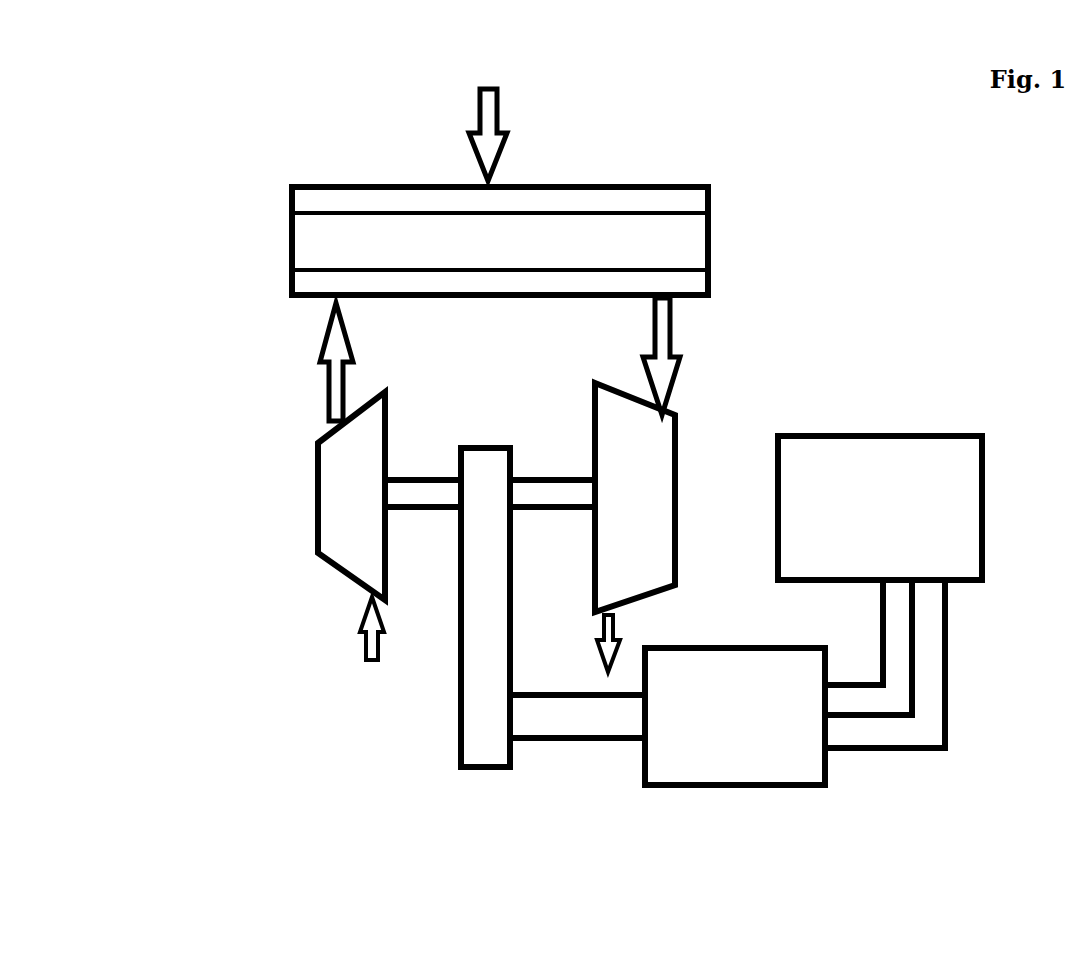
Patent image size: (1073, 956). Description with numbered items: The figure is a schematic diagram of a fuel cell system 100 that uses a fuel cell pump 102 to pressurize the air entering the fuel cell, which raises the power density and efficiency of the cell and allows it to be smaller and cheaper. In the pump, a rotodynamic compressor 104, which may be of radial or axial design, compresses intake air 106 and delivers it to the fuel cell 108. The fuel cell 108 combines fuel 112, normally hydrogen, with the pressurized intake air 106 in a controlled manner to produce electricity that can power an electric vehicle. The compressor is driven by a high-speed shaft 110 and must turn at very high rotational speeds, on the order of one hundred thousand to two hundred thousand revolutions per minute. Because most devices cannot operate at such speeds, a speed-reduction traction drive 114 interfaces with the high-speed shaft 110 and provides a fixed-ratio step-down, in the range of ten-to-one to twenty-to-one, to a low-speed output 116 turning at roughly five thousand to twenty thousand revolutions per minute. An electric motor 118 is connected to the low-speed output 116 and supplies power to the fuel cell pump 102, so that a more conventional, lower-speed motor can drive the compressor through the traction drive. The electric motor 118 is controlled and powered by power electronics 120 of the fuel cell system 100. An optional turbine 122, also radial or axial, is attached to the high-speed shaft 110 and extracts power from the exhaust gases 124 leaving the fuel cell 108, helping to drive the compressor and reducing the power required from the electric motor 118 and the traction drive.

The fuel cell system 100 is at (262, 178).
The fuel cell pump 102 is at (466, 559).
The rotodynamic compressor 104 is at (330, 528).
The intake air 106 is at (362, 648).
The fuel cell 108 is at (562, 228).
The high-speed shaft 110 is at (424, 490).
The fuel 112 is at (482, 147).
The speed-reduction traction drive 114 is at (483, 597).
The low-speed output 116 is at (570, 710).
The electric motor 118 is at (782, 725).
The power electronics 120 is at (930, 458).
The turbine 122 is at (705, 480).
The exhaust gases 124 is at (655, 338).